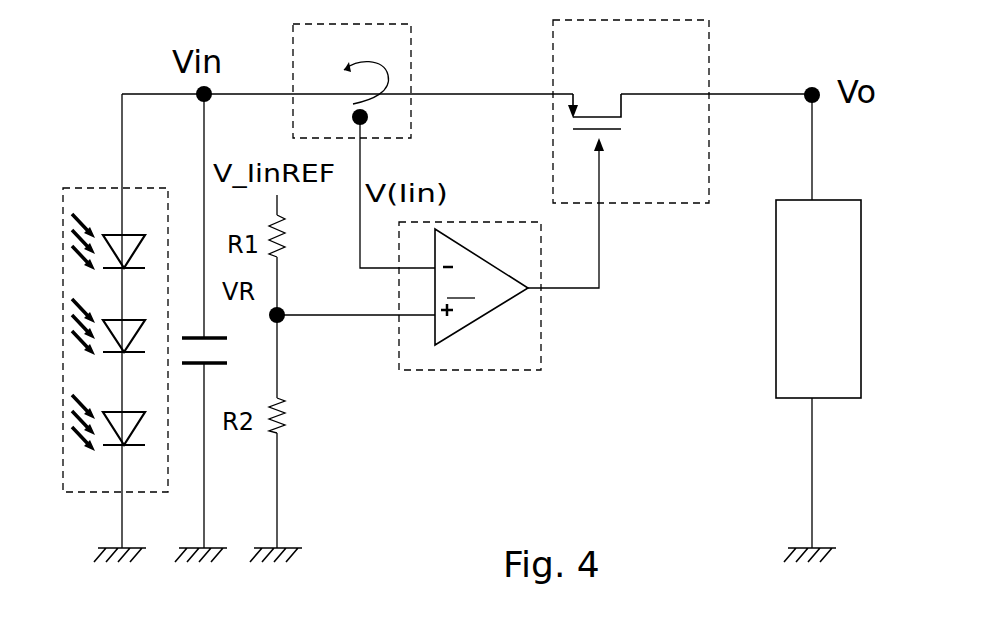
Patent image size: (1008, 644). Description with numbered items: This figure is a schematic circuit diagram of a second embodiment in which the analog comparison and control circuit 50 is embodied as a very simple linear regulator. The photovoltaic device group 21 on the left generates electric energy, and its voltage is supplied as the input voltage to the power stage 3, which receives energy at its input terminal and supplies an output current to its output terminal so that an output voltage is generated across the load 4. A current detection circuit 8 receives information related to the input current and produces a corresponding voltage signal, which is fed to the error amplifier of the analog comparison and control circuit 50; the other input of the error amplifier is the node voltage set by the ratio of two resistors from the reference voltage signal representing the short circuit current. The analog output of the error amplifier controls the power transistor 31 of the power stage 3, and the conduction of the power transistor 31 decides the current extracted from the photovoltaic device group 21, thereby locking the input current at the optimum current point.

The photovoltaic device group 21 is at (112, 187).
The current detection circuit 8 is at (411, 112).
The analog comparison and control circuit 50 is at (470, 370).
The power stage 3 is at (659, 154).
The power transistor 31 is at (587, 102).
The load 4 is at (833, 398).